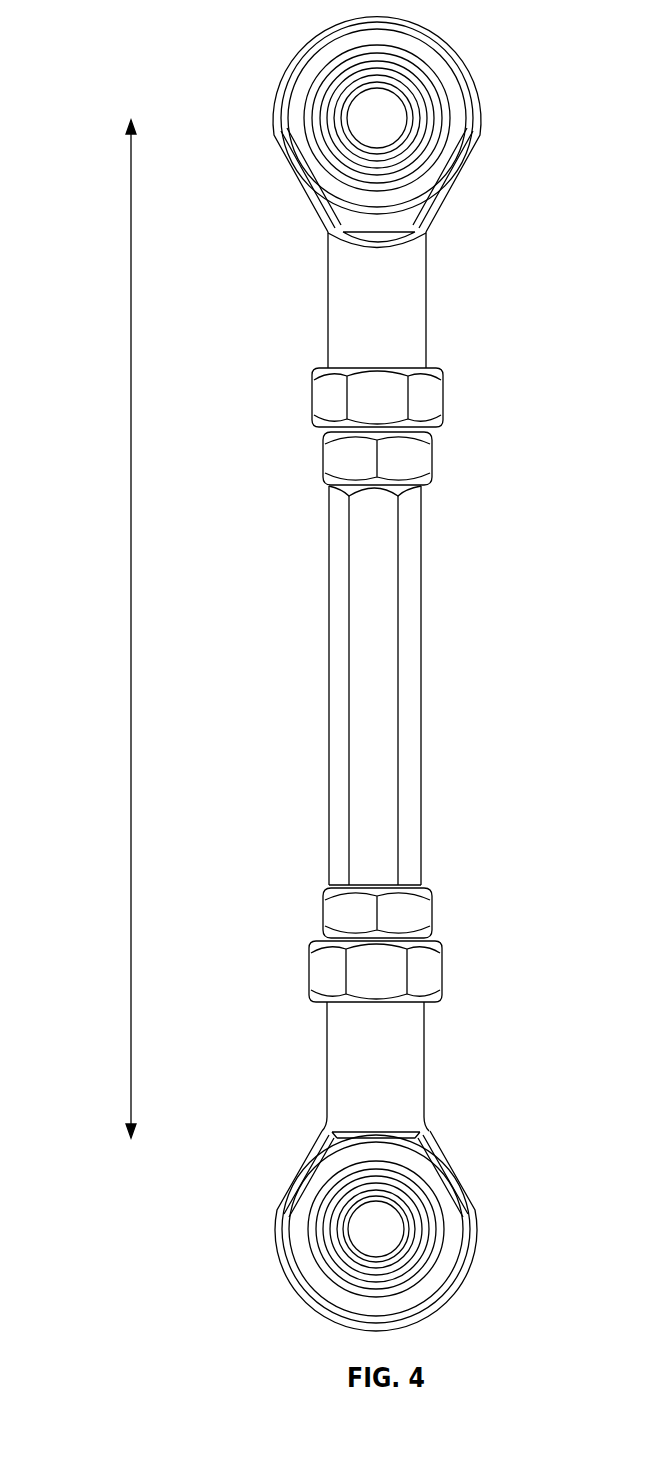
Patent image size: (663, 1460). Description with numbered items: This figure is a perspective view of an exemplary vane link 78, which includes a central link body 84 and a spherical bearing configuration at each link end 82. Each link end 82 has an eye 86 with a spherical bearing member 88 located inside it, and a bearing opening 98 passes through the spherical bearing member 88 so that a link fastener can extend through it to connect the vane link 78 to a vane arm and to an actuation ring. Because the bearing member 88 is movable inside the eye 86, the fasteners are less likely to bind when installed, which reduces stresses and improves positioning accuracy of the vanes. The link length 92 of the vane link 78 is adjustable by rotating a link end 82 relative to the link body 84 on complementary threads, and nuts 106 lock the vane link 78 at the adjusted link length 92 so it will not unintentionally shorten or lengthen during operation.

The vane link 78 is at (398, 652).
The link end 82 is at (415, 273).
The link body 84 is at (356, 765).
The eye 86 is at (468, 97).
The spherical bearing member 88 is at (330, 112).
The link length 92 is at (130, 657).
The bearing opening 98 is at (385, 117).
The nuts 106 is at (425, 398).